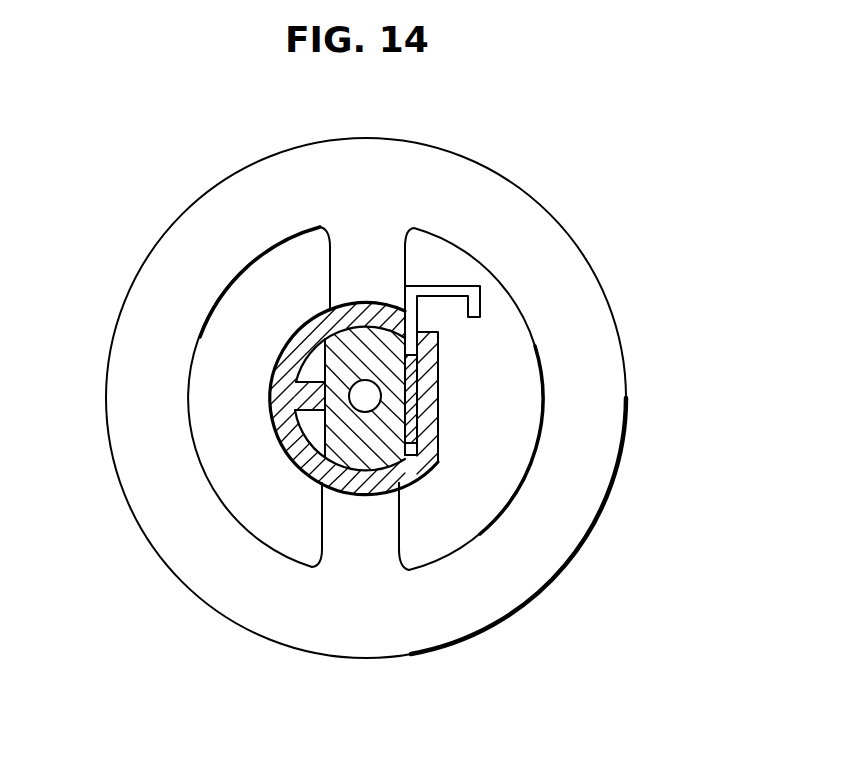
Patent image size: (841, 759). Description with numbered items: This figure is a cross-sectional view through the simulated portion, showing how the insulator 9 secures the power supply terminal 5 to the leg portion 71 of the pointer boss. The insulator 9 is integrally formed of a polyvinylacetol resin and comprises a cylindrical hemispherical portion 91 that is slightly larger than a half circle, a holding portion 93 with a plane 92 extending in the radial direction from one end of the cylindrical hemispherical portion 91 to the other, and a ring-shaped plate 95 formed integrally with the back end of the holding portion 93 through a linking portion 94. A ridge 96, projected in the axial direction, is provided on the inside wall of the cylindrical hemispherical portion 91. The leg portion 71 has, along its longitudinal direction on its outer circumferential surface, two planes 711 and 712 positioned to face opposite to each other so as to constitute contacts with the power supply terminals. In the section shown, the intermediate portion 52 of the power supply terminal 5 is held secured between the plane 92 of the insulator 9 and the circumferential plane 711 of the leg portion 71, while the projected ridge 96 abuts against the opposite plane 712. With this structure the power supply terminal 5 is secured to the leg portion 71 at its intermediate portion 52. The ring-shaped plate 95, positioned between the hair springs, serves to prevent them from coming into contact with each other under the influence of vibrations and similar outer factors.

The insulator 9 is at (183, 240).
The cylindrical hemispherical portion 91 is at (302, 338).
The ridge 96 is at (287, 398).
The plane 712 is at (293, 445).
The leg portion 71 is at (362, 342).
The plane 711 is at (438, 367).
The power supply terminal 5 is at (582, 370).
The intermediate portion 52 is at (438, 405).
The plane 92 is at (423, 422).
The holding portion 93 is at (420, 468).
The linking portion 94 is at (350, 522).
The ring-shaped plate 95 is at (382, 612).